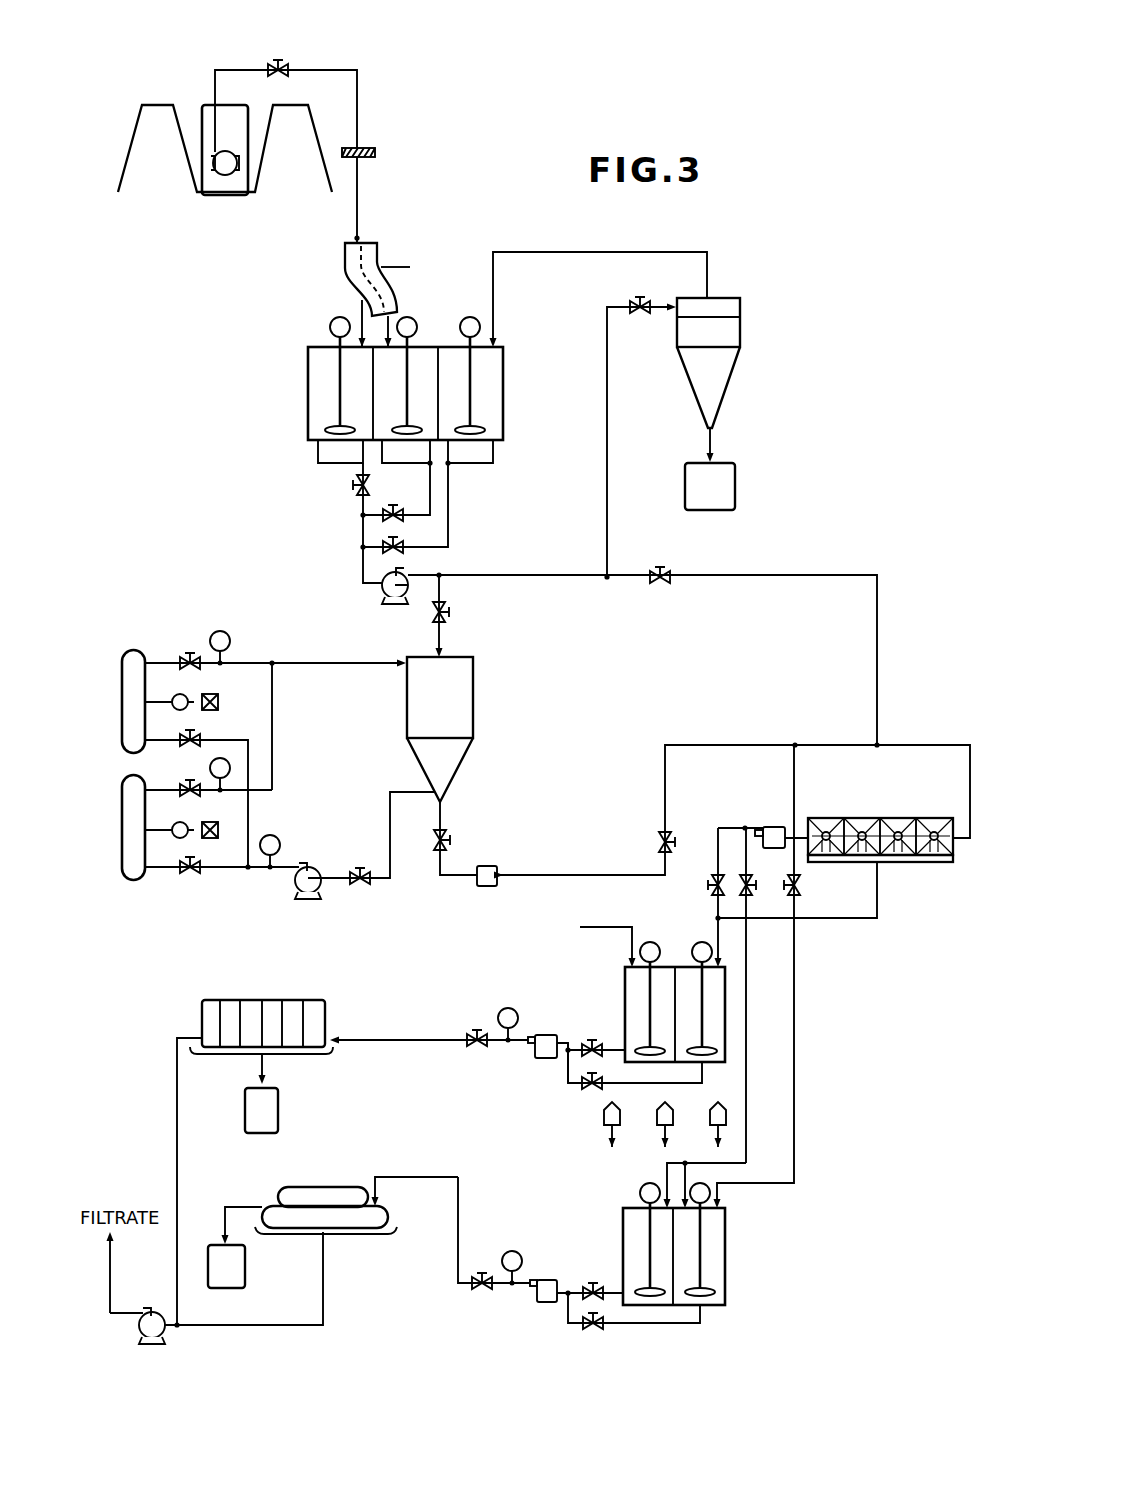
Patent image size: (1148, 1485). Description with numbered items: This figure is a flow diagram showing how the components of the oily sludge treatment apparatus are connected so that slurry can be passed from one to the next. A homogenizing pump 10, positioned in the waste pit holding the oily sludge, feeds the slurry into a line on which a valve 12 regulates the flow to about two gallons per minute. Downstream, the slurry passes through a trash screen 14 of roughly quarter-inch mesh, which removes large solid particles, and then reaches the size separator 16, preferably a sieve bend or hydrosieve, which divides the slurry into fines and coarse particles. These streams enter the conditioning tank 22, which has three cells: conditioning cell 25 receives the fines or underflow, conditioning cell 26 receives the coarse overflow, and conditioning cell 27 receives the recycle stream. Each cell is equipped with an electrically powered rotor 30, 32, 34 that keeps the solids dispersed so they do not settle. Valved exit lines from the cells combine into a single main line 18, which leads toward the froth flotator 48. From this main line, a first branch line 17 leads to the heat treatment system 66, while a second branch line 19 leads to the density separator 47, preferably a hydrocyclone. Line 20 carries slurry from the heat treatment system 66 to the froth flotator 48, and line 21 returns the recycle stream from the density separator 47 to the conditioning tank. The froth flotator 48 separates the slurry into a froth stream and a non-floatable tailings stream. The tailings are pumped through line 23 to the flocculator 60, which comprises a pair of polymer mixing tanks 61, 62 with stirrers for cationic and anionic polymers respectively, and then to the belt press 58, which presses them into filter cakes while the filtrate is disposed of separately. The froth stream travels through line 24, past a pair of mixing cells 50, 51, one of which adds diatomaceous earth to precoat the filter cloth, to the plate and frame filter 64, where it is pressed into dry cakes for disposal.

The homogenizing pump 10 is at (210, 183).
The valve 12 is at (288, 68).
The trash screen 14 is at (363, 150).
The size separator 16 is at (345, 255).
The first branch line 17 is at (448, 585).
The main line 18 is at (360, 573).
The second branch line 19 is at (615, 465).
The line 20 is at (450, 886).
The line 21 is at (590, 250).
The conditioning tank 22 is at (392, 379).
The line 23 is at (797, 1063).
The line 24 is at (385, 1038).
The conditioning cell 25 is at (314, 360).
The conditioning cell 26 is at (427, 352).
The conditioning cell 27 is at (503, 372).
The rotor 30 is at (335, 412).
The rotor 32 is at (408, 410).
The rotor 34 is at (473, 397).
The density separator 47 is at (740, 372).
The froth flotator 48 is at (866, 817).
The mixing cell 50 is at (674, 1037).
The mixing cell 51 is at (625, 992).
The belt press 58 is at (330, 1187).
The flocculator 60 is at (658, 1256).
The mixing tank 61 is at (623, 1258).
The mixing tank 62 is at (718, 1282).
The plate and frame filter 64 is at (280, 1000).
The heat treatment system 66 is at (473, 700).